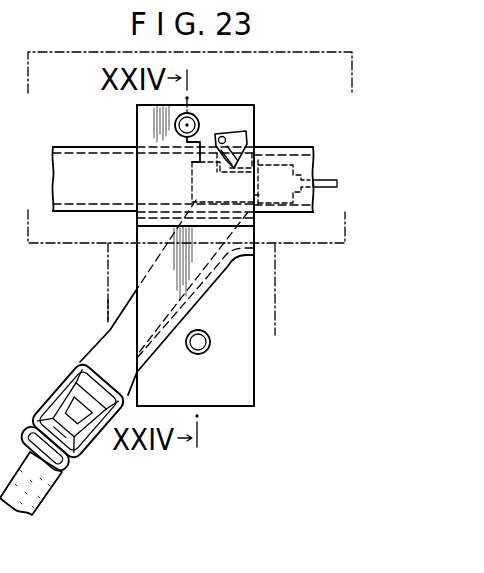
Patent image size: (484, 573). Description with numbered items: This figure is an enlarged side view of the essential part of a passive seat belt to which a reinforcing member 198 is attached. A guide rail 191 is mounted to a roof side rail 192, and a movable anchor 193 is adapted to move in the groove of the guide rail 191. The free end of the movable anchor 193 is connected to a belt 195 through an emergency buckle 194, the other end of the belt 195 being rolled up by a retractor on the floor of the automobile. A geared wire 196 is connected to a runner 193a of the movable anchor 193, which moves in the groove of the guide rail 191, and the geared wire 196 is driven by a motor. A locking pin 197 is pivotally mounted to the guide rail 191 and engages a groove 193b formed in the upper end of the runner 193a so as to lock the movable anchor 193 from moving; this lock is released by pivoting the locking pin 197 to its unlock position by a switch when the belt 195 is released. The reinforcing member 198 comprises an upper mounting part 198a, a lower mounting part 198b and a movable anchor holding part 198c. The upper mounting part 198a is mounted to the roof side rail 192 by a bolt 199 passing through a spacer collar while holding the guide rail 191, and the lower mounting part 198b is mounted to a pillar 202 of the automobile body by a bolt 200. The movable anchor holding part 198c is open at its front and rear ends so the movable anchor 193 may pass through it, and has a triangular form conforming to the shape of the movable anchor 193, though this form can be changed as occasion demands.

The guide rail 191 is at (280, 147).
The roof side rail 192 is at (46, 214).
The movable anchor 193 is at (133, 294).
The runner 193a is at (272, 193).
The groove 193b is at (223, 193).
The emergency buckle 194 is at (66, 392).
The belt 195 is at (42, 489).
The geared wire 196 is at (327, 180).
The locking pin 197 is at (247, 131).
The reinforcing member 198 is at (254, 308).
The upper mounting part 198a is at (137, 126).
The lower mounting part 198b is at (254, 388).
The movable anchor holding part 198c is at (137, 229).
The bolt 199 is at (196, 115).
The bolt 200 is at (210, 342).
The pillar 202 is at (112, 311).